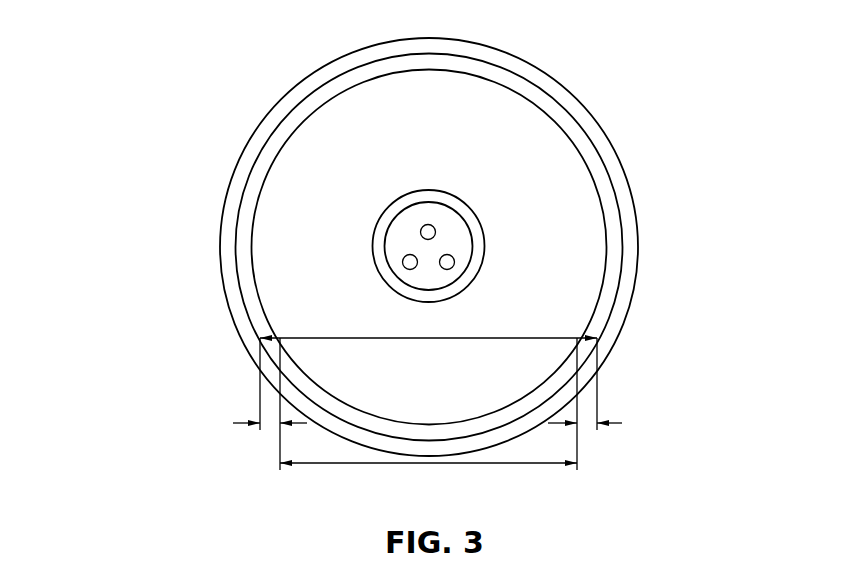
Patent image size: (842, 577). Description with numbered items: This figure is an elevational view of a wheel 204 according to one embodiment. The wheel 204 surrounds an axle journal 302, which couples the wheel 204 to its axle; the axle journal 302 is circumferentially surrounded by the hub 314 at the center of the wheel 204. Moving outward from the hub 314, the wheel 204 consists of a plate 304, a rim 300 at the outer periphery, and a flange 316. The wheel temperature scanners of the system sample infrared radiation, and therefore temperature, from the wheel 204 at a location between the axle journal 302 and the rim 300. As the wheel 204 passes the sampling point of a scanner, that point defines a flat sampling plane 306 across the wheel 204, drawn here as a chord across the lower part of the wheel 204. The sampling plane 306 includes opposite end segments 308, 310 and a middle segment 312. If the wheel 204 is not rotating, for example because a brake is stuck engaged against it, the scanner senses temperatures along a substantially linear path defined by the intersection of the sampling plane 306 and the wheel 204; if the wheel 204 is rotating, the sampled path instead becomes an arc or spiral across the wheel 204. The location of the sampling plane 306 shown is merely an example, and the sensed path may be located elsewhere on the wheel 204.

The wheel 204 is at (124, 149).
The rim 300 is at (613, 225).
The flange 316 is at (572, 110).
The plate 304 is at (562, 168).
The axle journal 302 is at (453, 202).
The hub 314 is at (479, 255).
The sampling plane 306 is at (352, 338).
The end segment 308 is at (240, 423).
The end segment 310 is at (612, 423).
The middle segment 312 is at (432, 463).